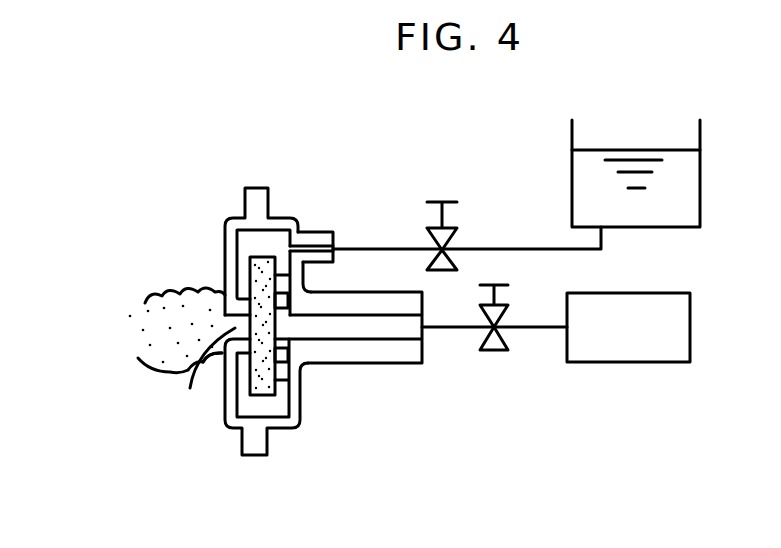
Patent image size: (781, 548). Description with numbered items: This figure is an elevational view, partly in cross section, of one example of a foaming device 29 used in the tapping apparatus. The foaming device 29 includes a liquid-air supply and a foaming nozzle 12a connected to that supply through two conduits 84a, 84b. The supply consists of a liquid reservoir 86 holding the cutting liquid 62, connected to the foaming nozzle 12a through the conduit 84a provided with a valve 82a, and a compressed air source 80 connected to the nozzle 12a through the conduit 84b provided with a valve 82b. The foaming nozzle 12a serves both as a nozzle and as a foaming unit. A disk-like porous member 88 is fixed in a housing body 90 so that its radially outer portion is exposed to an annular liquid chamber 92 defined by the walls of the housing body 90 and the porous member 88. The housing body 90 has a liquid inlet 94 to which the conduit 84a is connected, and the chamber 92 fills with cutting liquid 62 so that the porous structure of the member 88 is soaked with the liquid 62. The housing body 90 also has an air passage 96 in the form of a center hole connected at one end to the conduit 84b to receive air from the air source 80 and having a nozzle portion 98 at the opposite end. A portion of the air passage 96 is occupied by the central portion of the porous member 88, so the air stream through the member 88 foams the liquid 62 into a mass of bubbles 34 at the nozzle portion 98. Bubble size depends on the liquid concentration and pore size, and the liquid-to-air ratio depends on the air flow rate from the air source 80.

The foaming nozzle 12a is at (337, 221).
The foaming device 29 is at (438, 378).
The bubbles 34 is at (155, 322).
The cutting liquid 62 is at (682, 213).
The compressed air source 80 is at (643, 352).
The valve 82a is at (447, 202).
The valve 82b is at (493, 350).
The conduit 84a is at (506, 248).
The conduit 84b is at (532, 329).
The liquid reservoir 86 is at (700, 178).
The porous member 88 is at (262, 279).
The housing body 90 is at (240, 221).
The annular liquid chamber 92 is at (281, 404).
The liquid inlet 94 is at (315, 232).
The air passage 96 is at (373, 330).
The nozzle portion 98 is at (192, 376).